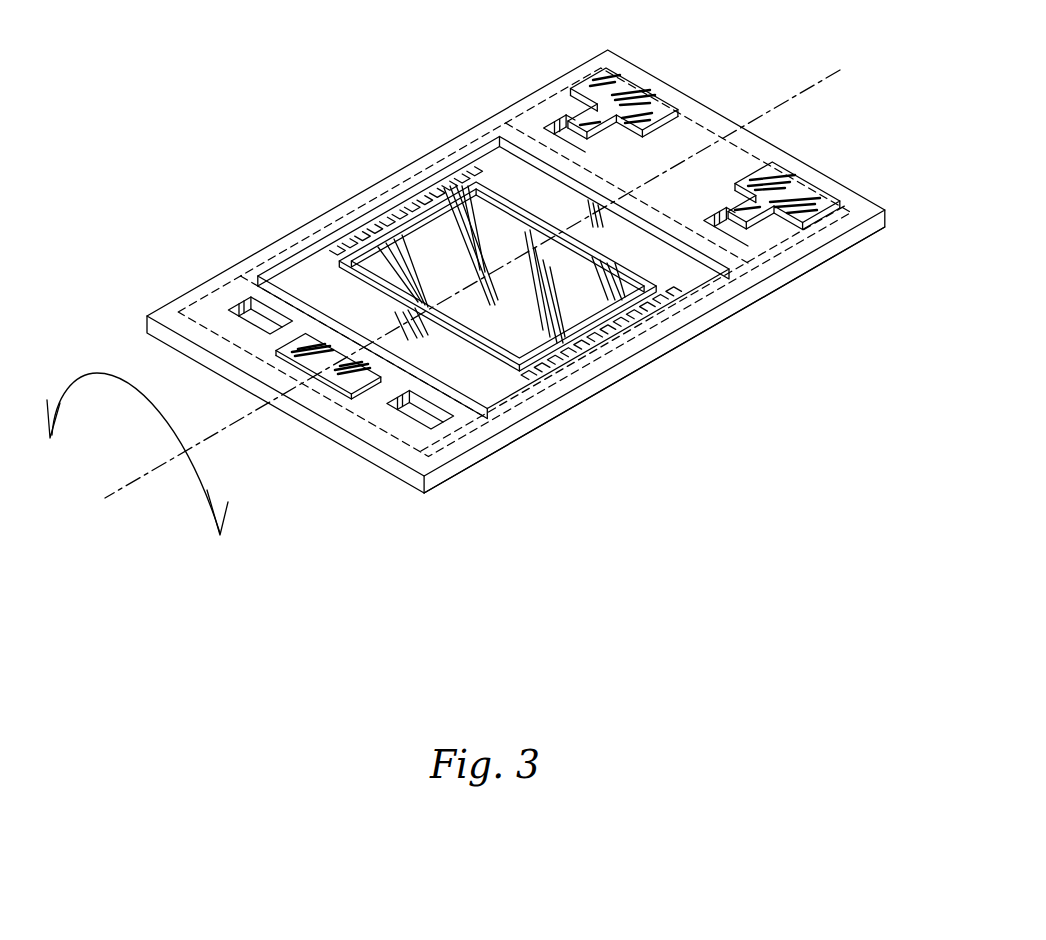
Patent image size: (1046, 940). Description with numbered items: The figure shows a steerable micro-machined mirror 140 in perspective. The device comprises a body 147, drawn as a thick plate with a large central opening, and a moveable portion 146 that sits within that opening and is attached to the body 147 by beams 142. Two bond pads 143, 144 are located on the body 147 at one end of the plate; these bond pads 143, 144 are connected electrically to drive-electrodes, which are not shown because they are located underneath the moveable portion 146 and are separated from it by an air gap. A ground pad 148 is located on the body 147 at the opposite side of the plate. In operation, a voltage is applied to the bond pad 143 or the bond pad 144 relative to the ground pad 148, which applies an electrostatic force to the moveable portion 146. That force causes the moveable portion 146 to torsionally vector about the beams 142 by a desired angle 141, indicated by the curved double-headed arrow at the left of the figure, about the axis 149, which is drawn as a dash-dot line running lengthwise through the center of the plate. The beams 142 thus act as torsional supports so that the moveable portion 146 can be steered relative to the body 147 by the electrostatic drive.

The steerable micro-machined mirror 140 is at (766, 472).
The desired angle 141 is at (137, 444).
The beams 142 is at (333, 285).
The bond pad 143 is at (623, 78).
The bond pad 144 is at (767, 176).
The moveable portion 146 is at (453, 208).
The body 147 is at (517, 437).
The ground pad 148 is at (364, 372).
The axis 149 is at (496, 276).